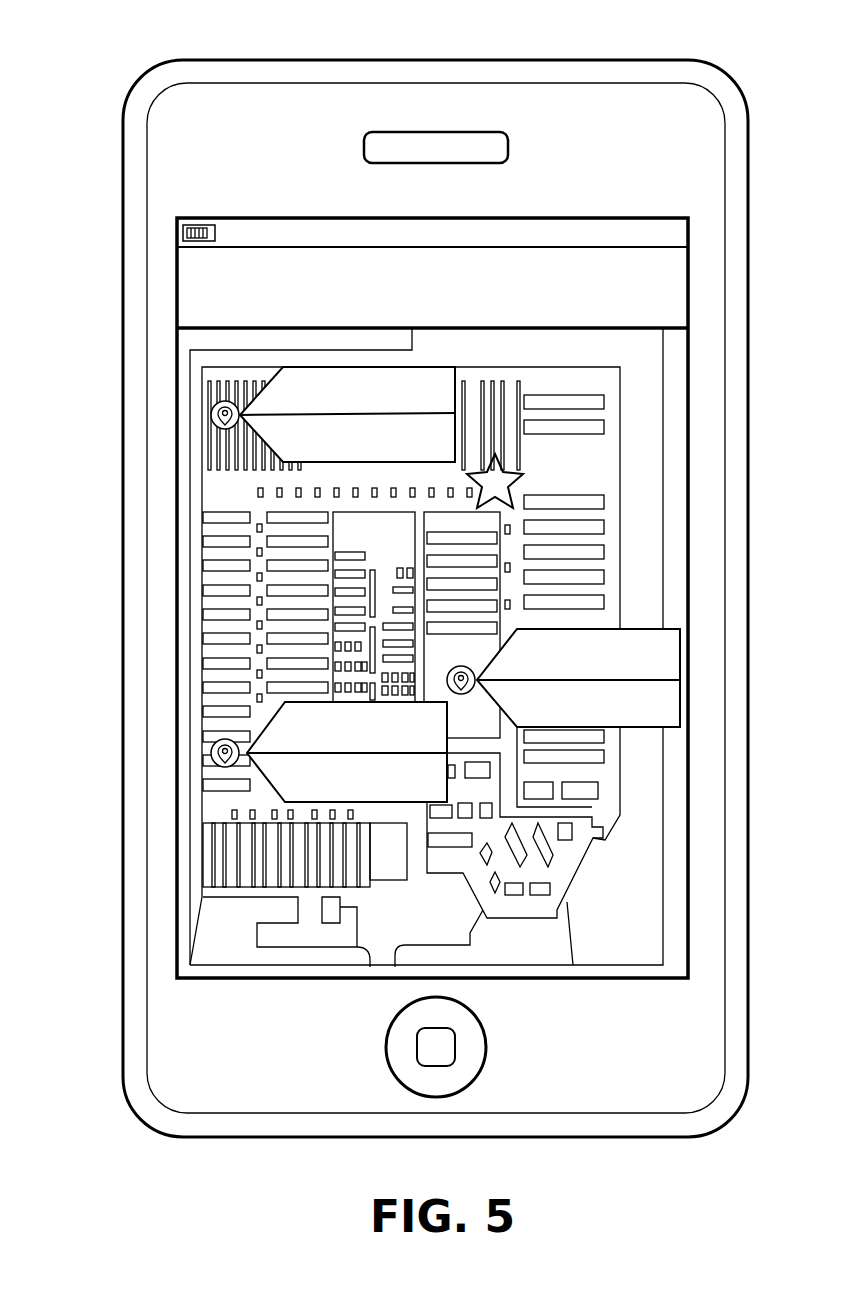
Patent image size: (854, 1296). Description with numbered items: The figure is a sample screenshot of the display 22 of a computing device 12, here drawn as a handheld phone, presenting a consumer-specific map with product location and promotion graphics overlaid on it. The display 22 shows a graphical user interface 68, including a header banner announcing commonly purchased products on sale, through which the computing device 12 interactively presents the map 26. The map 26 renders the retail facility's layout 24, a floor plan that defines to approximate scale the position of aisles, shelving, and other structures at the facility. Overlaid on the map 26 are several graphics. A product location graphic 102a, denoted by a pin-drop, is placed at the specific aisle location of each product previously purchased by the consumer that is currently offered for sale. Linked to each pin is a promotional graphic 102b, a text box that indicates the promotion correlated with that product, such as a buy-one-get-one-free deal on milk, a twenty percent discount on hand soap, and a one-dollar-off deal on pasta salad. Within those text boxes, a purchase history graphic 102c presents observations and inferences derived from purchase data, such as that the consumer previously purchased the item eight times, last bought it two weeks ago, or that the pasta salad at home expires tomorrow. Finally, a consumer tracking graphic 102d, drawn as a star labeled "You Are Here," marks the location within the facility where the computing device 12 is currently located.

The computing device 12 is at (690, 60).
The display 22 is at (690, 352).
The graphical user interface 68 is at (178, 290).
The map 26 is at (604, 553).
The layout 24 is at (240, 857).
The product location graphic 102a is at (212, 413).
The promotional graphic 102b is at (455, 378).
The purchase history graphic 102c is at (668, 708).
The consumer tracking graphic 102d is at (497, 475).